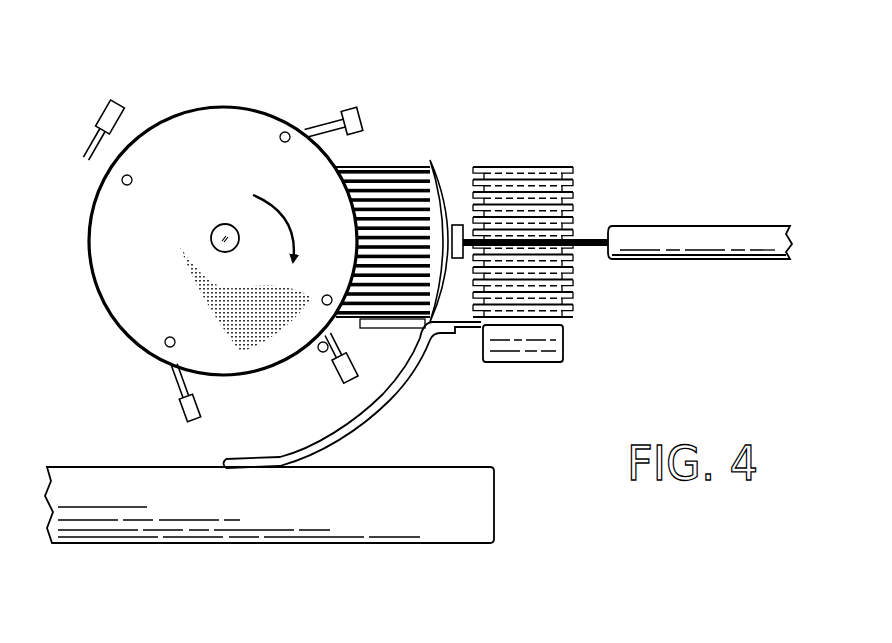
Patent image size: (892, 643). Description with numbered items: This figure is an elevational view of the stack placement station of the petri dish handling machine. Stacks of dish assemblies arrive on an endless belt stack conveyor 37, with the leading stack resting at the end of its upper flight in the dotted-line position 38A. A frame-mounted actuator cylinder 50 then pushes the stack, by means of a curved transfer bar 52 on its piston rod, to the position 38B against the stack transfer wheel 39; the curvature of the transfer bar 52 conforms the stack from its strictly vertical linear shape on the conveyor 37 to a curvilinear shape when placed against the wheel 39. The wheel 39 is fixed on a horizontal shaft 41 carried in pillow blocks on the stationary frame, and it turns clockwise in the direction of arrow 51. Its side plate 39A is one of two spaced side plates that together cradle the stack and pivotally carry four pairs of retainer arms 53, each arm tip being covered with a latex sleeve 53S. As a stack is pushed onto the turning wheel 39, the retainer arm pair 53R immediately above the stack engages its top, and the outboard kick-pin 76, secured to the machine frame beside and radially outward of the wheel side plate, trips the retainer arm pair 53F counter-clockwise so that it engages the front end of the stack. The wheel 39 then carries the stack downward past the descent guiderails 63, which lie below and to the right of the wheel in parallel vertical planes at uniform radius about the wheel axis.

The endless belt stack conveyor 37 is at (565, 337).
The dotted-line stack position 38A is at (539, 166).
The stack position against the wheel 38B is at (384, 165).
The stack transfer wheel 39 is at (112, 332).
The wheel side plate 39A is at (147, 328).
The horizontal shaft 41 is at (211, 237).
The actuator cylinder 50 is at (645, 225).
The arrow indicating clockwise direction 51 is at (263, 210).
The transfer bar 52 is at (451, 196).
The retainer arms 53 is at (322, 120).
The latex sleeve 53S is at (121, 110).
The retainer arm pair 53R is at (305, 112).
The retainer arm pair 53F is at (327, 368).
The descent guiderails 63 is at (377, 412).
The outboard kick-pin 76 is at (327, 363).